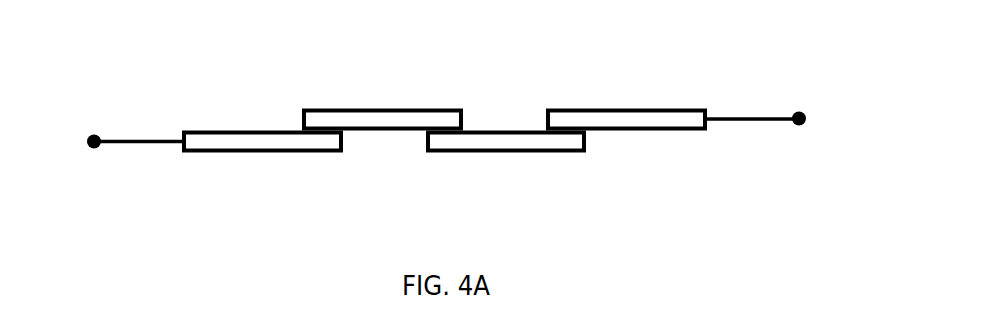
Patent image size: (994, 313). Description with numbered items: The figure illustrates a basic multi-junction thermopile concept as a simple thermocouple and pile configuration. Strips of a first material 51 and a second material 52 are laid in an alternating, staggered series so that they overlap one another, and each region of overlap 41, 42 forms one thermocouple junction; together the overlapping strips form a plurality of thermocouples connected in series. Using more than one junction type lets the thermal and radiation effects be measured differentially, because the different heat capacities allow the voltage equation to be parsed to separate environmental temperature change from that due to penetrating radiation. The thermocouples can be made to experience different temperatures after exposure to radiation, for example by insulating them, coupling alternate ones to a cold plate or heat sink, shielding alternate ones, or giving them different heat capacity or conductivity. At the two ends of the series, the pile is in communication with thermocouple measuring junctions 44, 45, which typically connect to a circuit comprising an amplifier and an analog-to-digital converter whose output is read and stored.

The region of overlap 41 is at (444, 179).
The region of overlap 42 is at (437, 128).
The thermocouple measuring junction 44 is at (95, 130).
The thermocouple measuring junction 45 is at (793, 112).
The first material 51 is at (537, 80).
The second material 52 is at (384, 191).